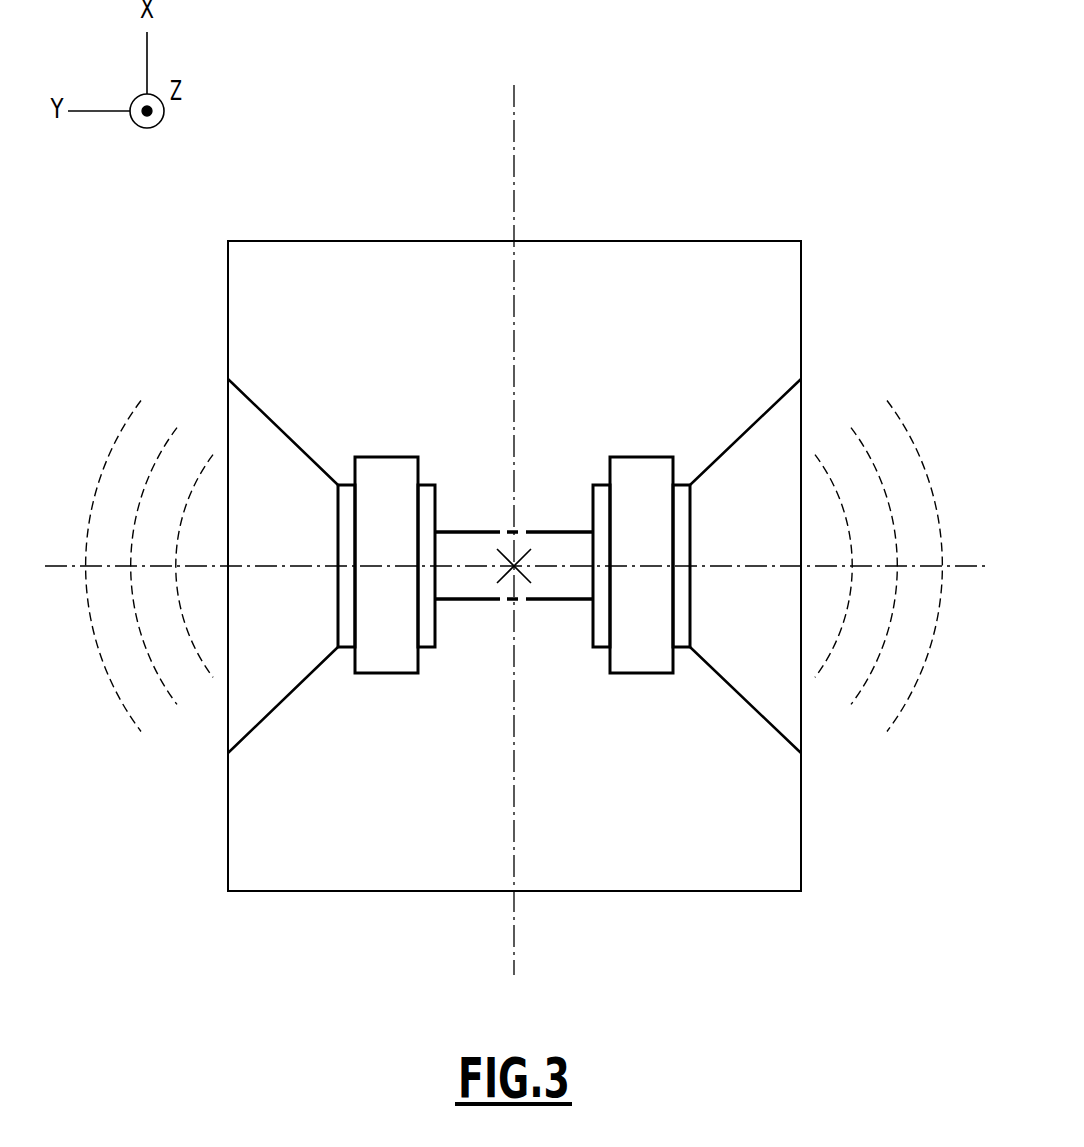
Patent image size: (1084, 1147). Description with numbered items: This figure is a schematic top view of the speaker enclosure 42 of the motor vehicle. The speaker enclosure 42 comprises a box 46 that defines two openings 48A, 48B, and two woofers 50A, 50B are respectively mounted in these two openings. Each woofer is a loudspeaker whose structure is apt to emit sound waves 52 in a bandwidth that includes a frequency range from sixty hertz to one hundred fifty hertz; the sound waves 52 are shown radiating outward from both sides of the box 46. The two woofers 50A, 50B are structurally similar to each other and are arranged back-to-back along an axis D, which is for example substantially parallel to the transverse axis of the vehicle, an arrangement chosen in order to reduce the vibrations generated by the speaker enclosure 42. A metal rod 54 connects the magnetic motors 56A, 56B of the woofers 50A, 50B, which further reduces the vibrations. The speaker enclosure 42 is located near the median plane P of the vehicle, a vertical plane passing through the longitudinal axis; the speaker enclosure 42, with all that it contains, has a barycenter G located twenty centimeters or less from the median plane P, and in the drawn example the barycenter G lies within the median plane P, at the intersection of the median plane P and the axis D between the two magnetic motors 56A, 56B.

The speaker enclosure 42 is at (322, 142).
The box 46 is at (640, 241).
The opening 48A is at (205, 726).
The opening 48B is at (823, 726).
The woofer 50A is at (300, 725).
The woofer 50B is at (728, 723).
The sound waves 52 is at (124, 428).
The metal rod 54 is at (567, 583).
The magnetic motor 56A is at (390, 652).
The magnetic motor 56B is at (648, 652).
The barycenter G is at (511, 578).
The median plane P is at (501, 527).
The axis D is at (515, 545).